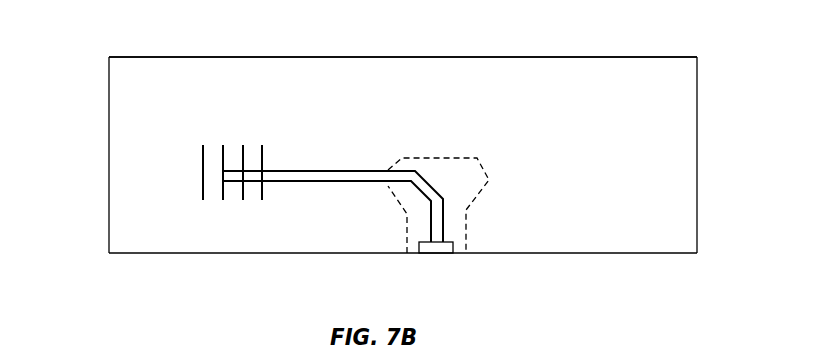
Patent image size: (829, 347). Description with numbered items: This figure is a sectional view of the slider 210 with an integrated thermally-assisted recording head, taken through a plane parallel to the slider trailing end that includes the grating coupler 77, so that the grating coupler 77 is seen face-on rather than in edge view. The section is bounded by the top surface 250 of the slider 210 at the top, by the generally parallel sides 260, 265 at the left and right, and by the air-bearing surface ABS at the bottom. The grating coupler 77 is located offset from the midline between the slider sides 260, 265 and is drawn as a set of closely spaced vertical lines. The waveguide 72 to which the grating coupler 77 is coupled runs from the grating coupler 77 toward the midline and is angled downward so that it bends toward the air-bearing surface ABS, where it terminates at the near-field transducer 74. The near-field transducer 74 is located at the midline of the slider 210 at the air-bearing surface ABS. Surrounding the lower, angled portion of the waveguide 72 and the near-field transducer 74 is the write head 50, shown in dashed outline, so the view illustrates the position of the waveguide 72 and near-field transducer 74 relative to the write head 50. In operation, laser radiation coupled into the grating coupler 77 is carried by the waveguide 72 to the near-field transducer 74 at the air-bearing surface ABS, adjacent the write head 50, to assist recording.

The slider 210 is at (156, 56).
The top surface 250 is at (387, 56).
The side 260 is at (109, 145).
The side 265 is at (697, 155).
The air-bearing surface ABS is at (148, 256).
The grating coupler 77 is at (190, 145).
The waveguide 72 is at (323, 183).
The near-field transducer 74 is at (440, 254).
The write head 50 is at (489, 180).